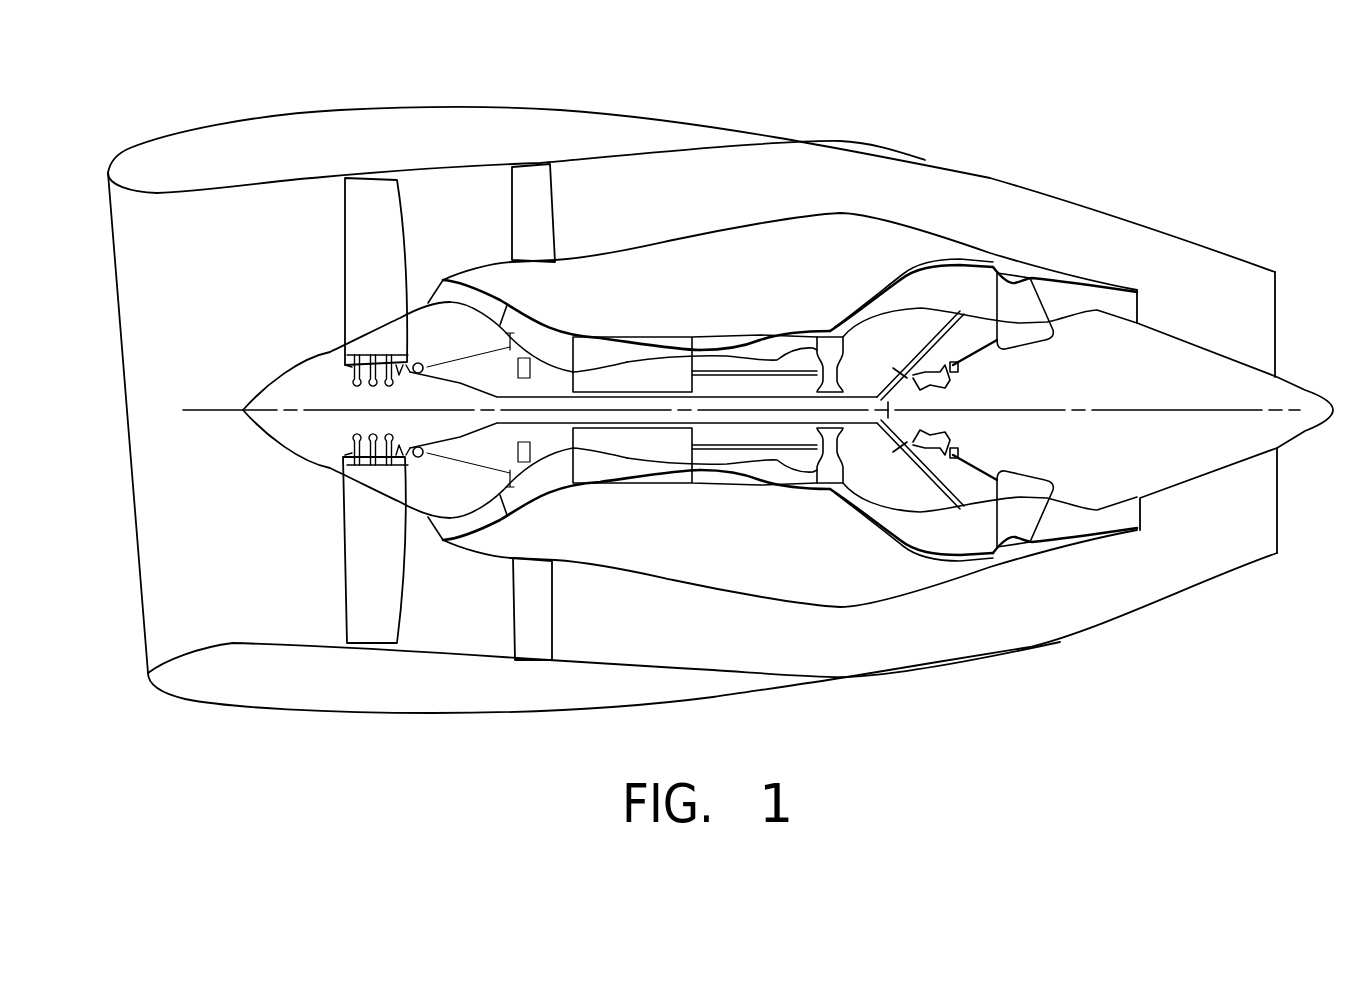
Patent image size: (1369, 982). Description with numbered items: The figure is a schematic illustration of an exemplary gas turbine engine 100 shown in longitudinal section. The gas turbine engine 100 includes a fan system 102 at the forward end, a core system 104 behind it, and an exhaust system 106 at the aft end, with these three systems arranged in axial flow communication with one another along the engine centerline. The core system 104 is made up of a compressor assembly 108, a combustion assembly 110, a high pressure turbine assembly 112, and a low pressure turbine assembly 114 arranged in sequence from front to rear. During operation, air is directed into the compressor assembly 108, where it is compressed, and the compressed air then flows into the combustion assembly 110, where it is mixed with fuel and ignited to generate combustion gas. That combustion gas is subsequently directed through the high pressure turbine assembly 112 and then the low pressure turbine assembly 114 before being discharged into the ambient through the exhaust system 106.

The gas turbine engine 100 is at (226, 98).
The fan system 102 is at (318, 262).
The core system 104 is at (607, 243).
The exhaust system 106 is at (1124, 272).
The compressor assembly 108 is at (533, 520).
The combustion assembly 110 is at (725, 500).
The high pressure turbine assembly 112 is at (827, 506).
The low pressure turbine assembly 114 is at (956, 562).